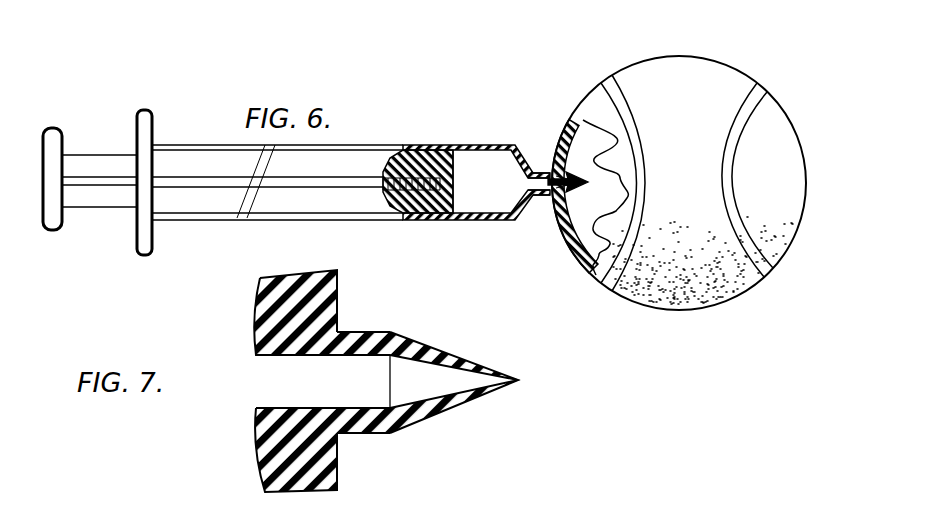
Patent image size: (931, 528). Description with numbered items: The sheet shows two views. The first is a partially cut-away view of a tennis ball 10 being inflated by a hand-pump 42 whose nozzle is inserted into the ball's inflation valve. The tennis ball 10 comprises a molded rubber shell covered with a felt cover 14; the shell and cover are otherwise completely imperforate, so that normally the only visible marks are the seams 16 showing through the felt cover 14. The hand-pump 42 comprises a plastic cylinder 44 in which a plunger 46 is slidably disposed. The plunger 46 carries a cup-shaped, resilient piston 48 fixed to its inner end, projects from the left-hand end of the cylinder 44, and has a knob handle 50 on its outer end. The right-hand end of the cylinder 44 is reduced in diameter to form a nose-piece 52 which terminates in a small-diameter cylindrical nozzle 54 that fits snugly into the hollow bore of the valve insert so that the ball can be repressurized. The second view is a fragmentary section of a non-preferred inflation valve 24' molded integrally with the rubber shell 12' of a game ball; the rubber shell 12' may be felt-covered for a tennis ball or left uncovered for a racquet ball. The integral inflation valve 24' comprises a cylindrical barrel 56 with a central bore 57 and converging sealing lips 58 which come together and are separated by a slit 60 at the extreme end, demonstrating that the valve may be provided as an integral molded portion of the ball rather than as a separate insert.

In FIG. 6, the tennis ball 10 is at (753, 60).
In FIG. 6, the felt cover 14 is at (667, 197).
In FIG. 6, the seams 16 is at (612, 97).
In FIG. 6, the hand-pump 42 is at (404, 118).
In FIG. 6, the plastic cylinder 44 is at (482, 219).
In FIG. 6, the plunger 46 is at (100, 182).
In FIG. 6, the cup-shaped resilient piston 48 is at (443, 150).
In FIG. 6, the knob handle 50 is at (50, 142).
In FIG. 6, the nose-piece 52 is at (546, 172).
In FIG. 6, the cylindrical nozzle 54 is at (548, 196).
In FIG. 7, the rubber shell 12' is at (270, 381).
In FIG. 7, the inflation valve 24' is at (454, 362).
In FIG. 7, the cylindrical barrel 56 is at (343, 338).
In FIG. 7, the central bore 57 is at (320, 407).
In FIG. 7, the converging sealing lips 58 is at (476, 367).
In FIG. 7, the slit 60 is at (523, 380).